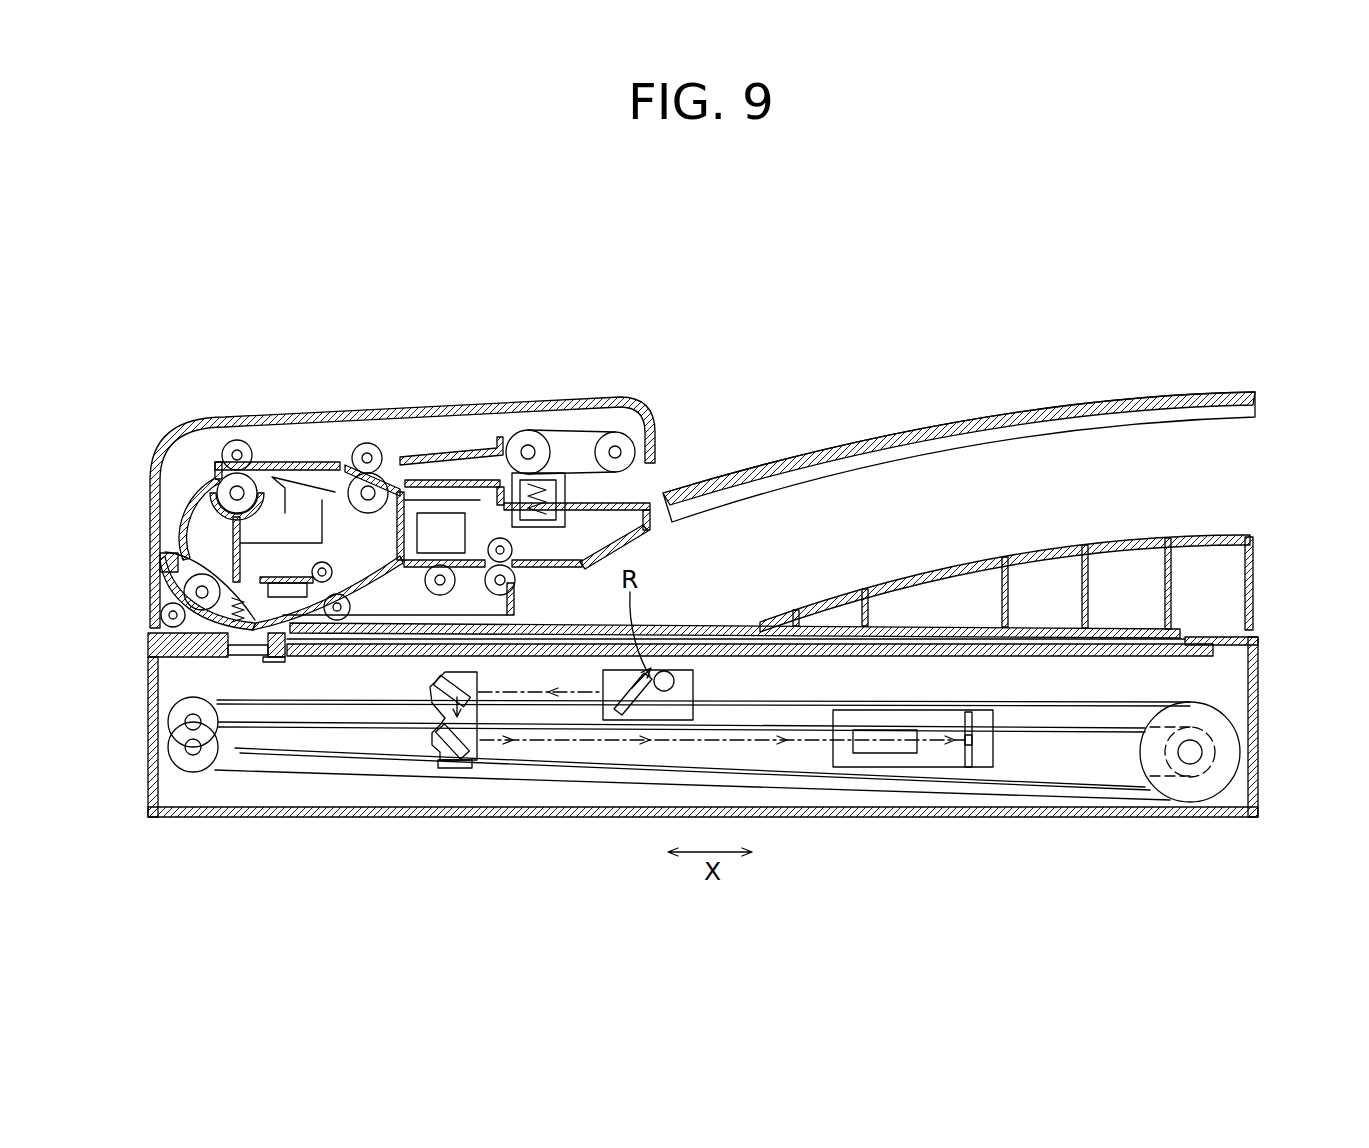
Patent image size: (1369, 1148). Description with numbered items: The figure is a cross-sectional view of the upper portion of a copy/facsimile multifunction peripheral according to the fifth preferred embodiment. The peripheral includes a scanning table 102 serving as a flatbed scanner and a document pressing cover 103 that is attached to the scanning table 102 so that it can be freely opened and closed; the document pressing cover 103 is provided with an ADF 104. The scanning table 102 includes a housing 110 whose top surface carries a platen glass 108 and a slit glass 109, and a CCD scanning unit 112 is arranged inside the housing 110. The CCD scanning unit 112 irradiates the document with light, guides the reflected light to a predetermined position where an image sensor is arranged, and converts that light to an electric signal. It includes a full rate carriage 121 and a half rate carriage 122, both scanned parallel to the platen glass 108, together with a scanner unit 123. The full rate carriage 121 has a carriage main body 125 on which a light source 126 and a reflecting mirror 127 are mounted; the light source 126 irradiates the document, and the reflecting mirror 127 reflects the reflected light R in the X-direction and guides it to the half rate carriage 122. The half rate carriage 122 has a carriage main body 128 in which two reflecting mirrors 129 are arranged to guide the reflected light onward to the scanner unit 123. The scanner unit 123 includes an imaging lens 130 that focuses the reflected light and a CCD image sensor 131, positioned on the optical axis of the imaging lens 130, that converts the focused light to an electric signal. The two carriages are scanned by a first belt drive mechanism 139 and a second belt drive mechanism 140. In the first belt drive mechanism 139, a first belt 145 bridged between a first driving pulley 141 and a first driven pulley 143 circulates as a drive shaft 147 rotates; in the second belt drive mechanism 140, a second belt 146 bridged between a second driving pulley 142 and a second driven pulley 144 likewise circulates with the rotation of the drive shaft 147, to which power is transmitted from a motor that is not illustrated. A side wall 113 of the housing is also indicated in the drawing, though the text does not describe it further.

The scanning table 102 is at (1261, 663).
The document pressing cover 103 is at (690, 648).
The ADF 104 is at (585, 378).
The platen glass 108 is at (1093, 648).
The slit glass 109 is at (230, 568).
The housing 110 is at (1258, 721).
The CCD scanning unit 112 is at (729, 684).
The side wall 113 is at (1247, 683).
The full rate carriage 121 is at (676, 670).
The half rate carriage 122 is at (449, 778).
The scanner unit 123 is at (932, 693).
The carriage main body 125 is at (693, 690).
The light source 126 is at (665, 670).
The reflecting mirror 127 is at (632, 700).
The carriage main body 128 is at (438, 742).
The reflecting mirrors 129 is at (440, 680).
The imaging lens 130 is at (888, 740).
The CCD image sensor 131 is at (968, 712).
The first belt drive mechanism 139 is at (186, 683).
The second belt drive mechanism 140 is at (187, 783).
The first driving pulley 141 is at (1241, 753).
The second driving pulley 142 is at (1207, 783).
The first driven pulley 143 is at (180, 712).
The second driven pulley 144 is at (185, 748).
The first belt 145 is at (1140, 797).
The second belt 146 is at (1065, 775).
The drive shaft 147 is at (1190, 765).